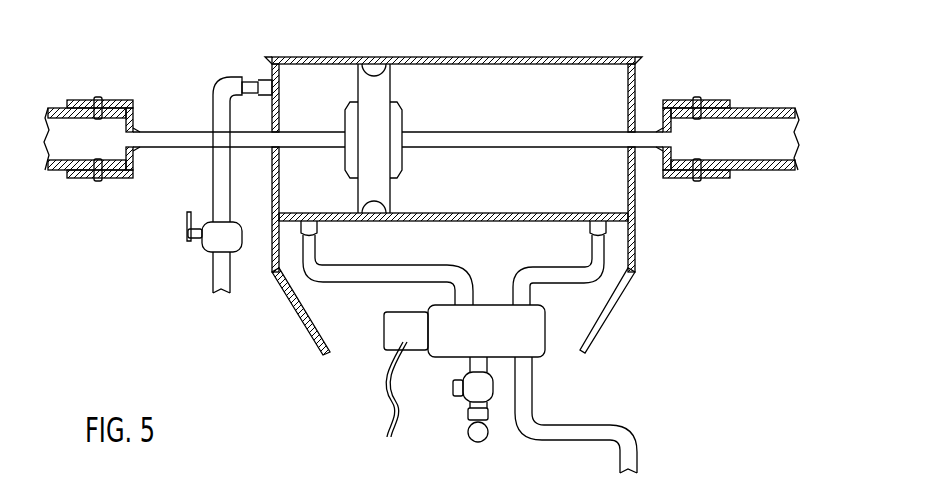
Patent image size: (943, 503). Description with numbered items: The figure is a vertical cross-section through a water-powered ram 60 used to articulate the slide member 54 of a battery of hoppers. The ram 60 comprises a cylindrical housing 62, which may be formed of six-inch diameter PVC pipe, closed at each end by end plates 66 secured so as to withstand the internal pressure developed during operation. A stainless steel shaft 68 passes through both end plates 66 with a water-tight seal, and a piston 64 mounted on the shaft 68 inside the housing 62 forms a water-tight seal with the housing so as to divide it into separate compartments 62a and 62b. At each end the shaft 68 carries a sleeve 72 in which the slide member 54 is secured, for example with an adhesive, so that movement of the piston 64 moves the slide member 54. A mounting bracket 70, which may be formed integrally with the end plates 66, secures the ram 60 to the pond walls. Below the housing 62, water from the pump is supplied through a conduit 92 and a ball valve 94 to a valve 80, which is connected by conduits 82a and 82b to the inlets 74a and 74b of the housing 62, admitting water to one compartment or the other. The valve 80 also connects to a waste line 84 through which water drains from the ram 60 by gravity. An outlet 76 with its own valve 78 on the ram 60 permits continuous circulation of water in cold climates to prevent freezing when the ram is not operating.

The slide member 54 is at (57, 107).
The water-powered ram 60 is at (452, 47).
The cylindrical housing 62 is at (585, 57).
The compartment 62a is at (340, 100).
The compartment 62b is at (525, 100).
The piston 64 is at (378, 57).
The end plates 66 is at (273, 57).
The shaft 68 is at (187, 140).
The mounting bracket 70 is at (288, 310).
The sleeve 72 is at (118, 100).
The inlet 74a is at (318, 230).
The inlet 74b is at (589, 228).
The outlet 76 is at (253, 75).
The valve 78 is at (213, 240).
The valve 80 is at (499, 341).
The conduit 82a is at (363, 277).
The conduit 82b is at (557, 278).
The waste line 84 is at (630, 430).
The conduit 92 is at (475, 440).
The ball valve 94 is at (477, 388).